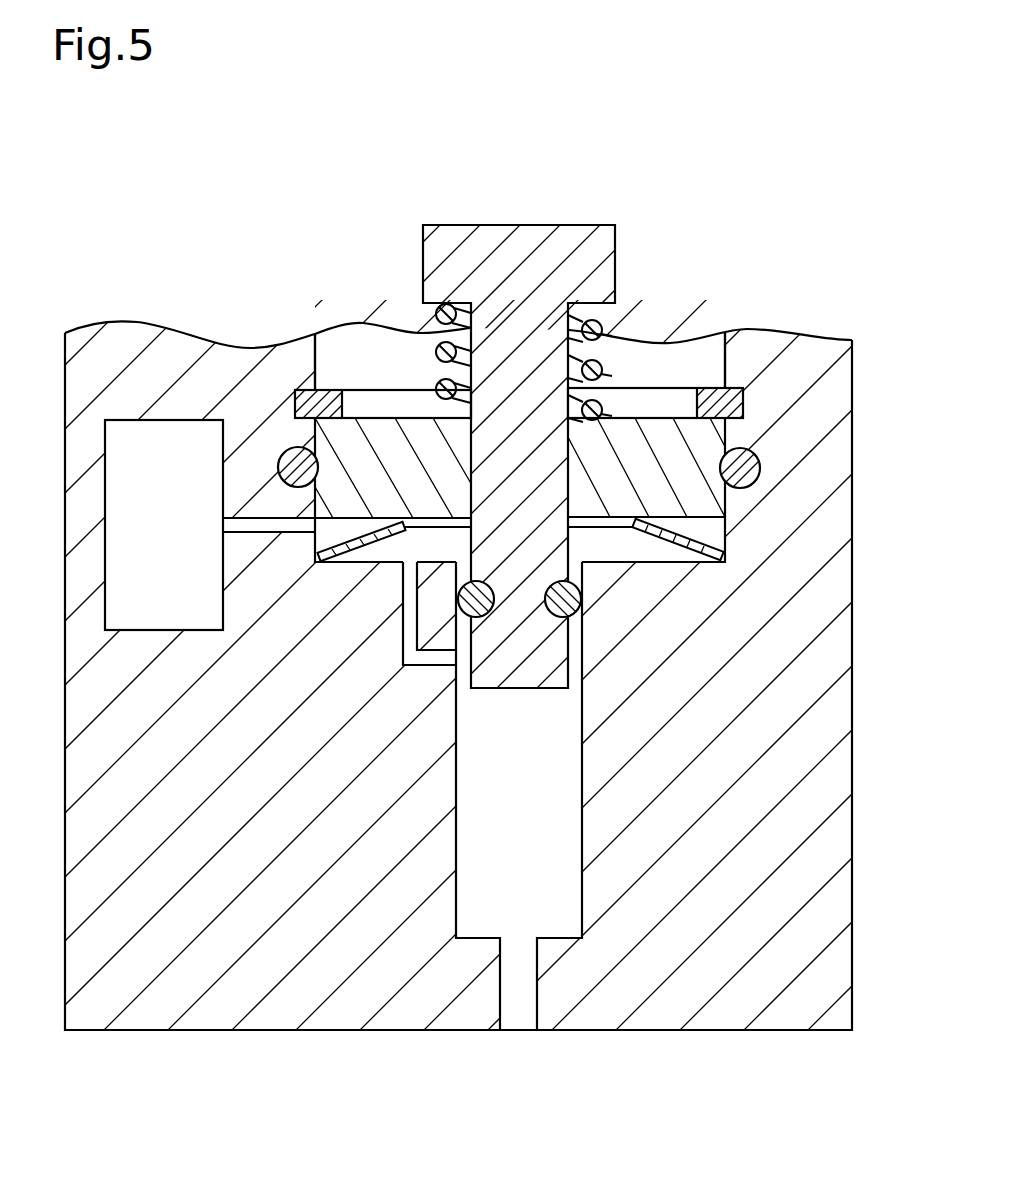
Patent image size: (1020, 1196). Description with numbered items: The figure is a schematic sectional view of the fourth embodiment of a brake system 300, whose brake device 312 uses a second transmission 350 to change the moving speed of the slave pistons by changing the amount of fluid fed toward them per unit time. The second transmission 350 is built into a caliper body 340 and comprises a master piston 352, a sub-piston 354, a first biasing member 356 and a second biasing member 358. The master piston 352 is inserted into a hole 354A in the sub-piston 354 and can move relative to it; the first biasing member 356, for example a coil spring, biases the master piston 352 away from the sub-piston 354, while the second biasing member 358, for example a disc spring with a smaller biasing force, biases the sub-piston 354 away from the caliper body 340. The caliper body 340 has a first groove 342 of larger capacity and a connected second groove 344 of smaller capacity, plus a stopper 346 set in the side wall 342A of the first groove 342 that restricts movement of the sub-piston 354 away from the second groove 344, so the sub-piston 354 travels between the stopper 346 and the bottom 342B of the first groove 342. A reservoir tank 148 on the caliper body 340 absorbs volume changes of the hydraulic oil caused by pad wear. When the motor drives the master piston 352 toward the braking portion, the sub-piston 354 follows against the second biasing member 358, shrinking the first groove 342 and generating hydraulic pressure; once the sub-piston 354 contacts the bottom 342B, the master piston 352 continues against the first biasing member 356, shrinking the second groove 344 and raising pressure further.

The reservoir tank 148 is at (105, 500).
The brake system 300 is at (510, 550).
The brake device 312 is at (510, 550).
The caliper body 340 is at (510, 550).
The first groove 342 is at (501, 405).
The side wall 342A is at (316, 354).
The bottom 342B is at (387, 556).
The second groove 344 is at (541, 756).
The stopper 346 is at (330, 386).
The second transmission 350 is at (510, 550).
The master piston 352 is at (573, 236).
The sub-piston 354 is at (522, 434).
The hole 354A is at (472, 444).
The first biasing member 356 is at (600, 325).
The second biasing member 358 is at (640, 540).